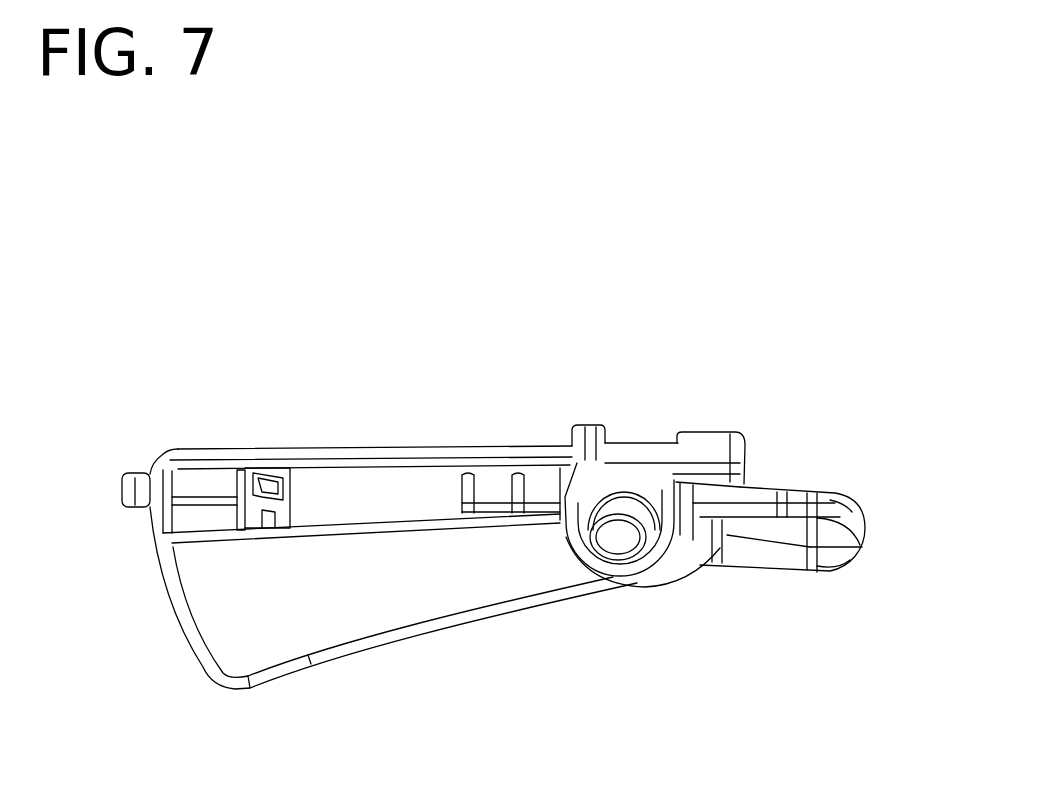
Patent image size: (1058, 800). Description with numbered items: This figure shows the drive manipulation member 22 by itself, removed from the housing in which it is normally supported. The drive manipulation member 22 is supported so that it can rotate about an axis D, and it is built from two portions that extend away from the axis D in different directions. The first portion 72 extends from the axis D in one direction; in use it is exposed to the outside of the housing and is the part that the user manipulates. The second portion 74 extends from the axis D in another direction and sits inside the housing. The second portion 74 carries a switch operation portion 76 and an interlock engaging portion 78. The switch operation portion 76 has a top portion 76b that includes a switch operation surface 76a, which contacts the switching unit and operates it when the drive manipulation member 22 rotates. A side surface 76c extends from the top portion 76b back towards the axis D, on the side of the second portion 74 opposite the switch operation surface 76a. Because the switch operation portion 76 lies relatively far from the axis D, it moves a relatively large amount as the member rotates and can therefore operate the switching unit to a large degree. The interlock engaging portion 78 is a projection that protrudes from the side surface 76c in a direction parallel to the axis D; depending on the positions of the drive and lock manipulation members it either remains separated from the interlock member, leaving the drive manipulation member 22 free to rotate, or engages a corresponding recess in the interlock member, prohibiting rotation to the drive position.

The drive manipulation member 22 is at (913, 267).
The first portion 72 is at (634, 444).
The second portion 74 is at (878, 337).
The switch operation portion 76 is at (832, 564).
The switch operation surface 76a is at (838, 572).
The top portion 76b is at (878, 528).
The side surface 76c is at (798, 489).
The interlock engaging portion 78 is at (710, 448).
The axis D is at (617, 542).